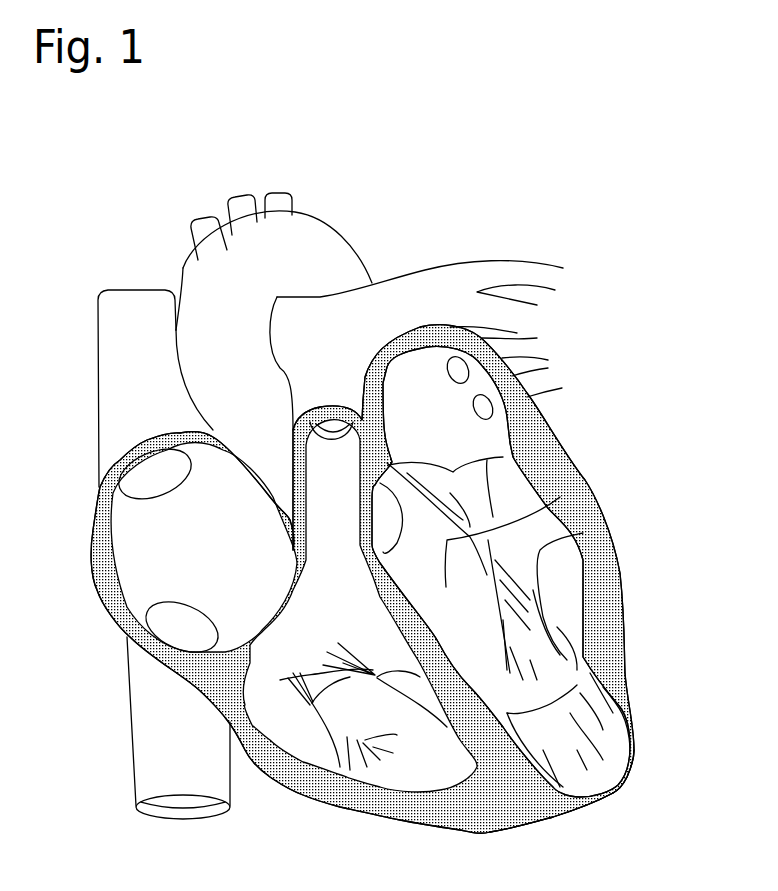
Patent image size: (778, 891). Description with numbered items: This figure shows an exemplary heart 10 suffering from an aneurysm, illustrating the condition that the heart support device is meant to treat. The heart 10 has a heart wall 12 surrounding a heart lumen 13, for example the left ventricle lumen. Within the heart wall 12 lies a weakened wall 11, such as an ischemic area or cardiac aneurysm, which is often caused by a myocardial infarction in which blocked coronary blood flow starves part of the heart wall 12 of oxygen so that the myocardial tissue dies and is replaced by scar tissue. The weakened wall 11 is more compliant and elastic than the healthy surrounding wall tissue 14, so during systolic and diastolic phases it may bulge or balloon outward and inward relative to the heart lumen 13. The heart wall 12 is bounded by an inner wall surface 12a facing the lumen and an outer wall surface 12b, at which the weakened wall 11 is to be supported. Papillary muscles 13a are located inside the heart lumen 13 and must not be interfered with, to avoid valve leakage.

The heart 10 is at (493, 222).
The weakened wall 11 is at (616, 798).
The heart wall 12 is at (621, 563).
The inner wall surface 12a is at (627, 748).
The outer wall surface 12b is at (632, 773).
The heart lumen 13 is at (560, 497).
The papillary muscles 13a is at (583, 533).
The healthy surrounding wall tissue 14 is at (620, 700).